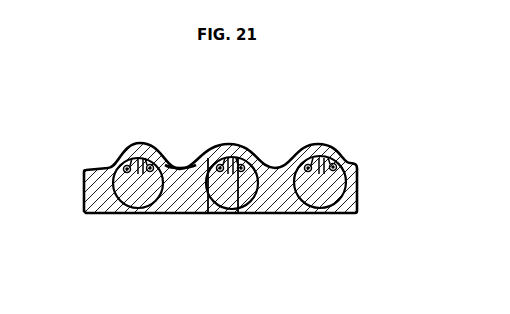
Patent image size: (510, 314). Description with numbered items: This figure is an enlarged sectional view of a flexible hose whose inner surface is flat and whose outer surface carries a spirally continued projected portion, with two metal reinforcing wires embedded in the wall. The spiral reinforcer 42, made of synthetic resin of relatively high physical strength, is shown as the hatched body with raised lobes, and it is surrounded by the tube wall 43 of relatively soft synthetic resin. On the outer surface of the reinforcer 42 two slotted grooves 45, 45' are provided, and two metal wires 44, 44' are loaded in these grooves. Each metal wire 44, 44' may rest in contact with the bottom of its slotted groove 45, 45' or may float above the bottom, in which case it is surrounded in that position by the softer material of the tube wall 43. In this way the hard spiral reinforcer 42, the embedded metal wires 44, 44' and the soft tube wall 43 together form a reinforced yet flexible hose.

The reinforcer 42 is at (113, 158).
The tube wall 43 is at (180, 166).
The metal wire 44 is at (223, 137).
The metal wire 44' is at (257, 141).
The slotted groove 45 is at (200, 209).
The slotted groove 45' is at (241, 209).